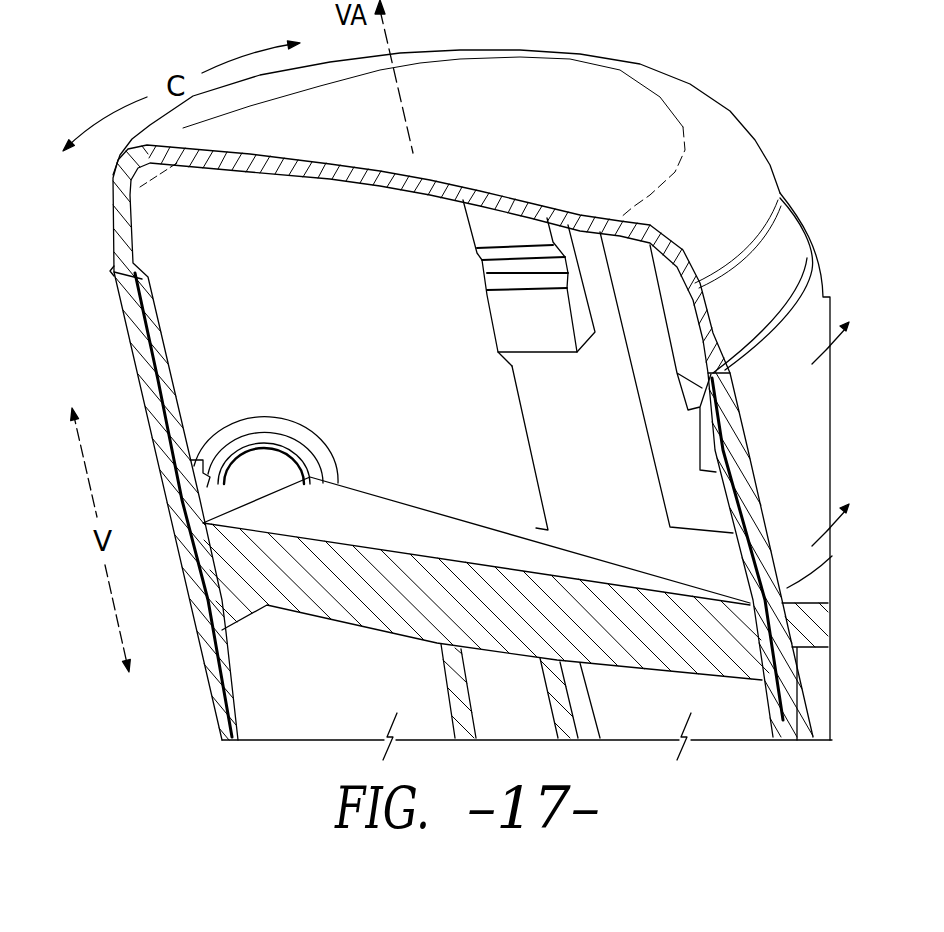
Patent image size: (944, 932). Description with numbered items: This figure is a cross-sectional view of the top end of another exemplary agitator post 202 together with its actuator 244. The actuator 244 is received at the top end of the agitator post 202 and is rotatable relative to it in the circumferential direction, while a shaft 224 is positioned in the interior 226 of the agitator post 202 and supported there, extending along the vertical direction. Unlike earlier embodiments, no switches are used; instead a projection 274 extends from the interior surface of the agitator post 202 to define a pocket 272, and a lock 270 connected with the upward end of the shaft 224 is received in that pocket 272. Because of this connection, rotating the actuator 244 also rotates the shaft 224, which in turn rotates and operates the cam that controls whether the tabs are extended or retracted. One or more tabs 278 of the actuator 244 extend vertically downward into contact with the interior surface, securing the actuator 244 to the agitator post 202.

The agitator post 202 is at (210, 678).
The shaft 224 is at (444, 680).
The interior 226 is at (182, 317).
The actuator 244 is at (538, 80).
The lock 270 is at (377, 512).
The pocket 272 is at (275, 460).
The projection 274 is at (262, 432).
The tabs 278 is at (498, 318).